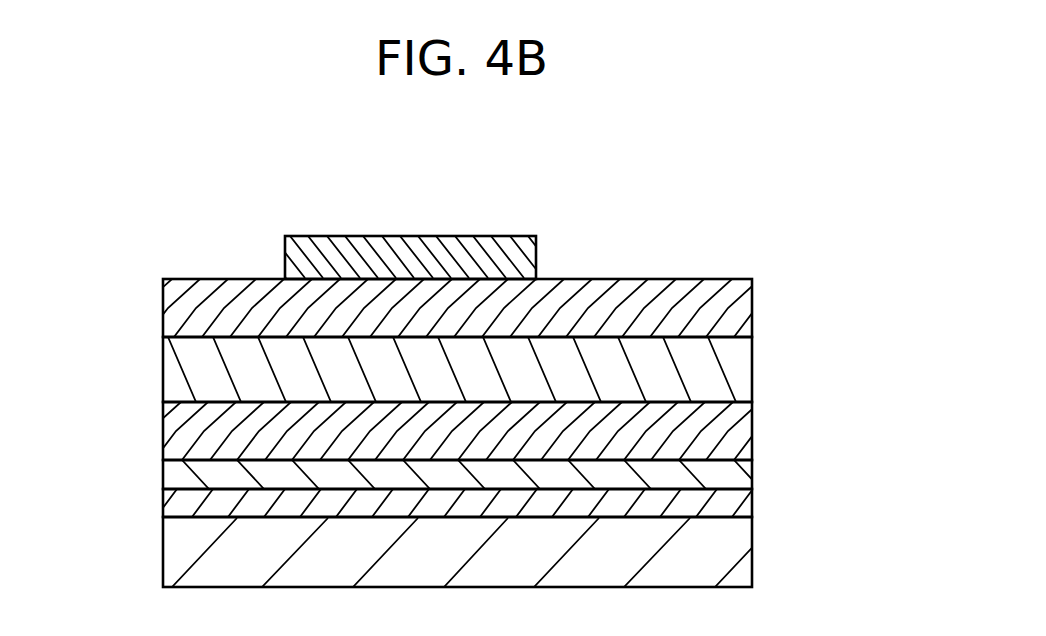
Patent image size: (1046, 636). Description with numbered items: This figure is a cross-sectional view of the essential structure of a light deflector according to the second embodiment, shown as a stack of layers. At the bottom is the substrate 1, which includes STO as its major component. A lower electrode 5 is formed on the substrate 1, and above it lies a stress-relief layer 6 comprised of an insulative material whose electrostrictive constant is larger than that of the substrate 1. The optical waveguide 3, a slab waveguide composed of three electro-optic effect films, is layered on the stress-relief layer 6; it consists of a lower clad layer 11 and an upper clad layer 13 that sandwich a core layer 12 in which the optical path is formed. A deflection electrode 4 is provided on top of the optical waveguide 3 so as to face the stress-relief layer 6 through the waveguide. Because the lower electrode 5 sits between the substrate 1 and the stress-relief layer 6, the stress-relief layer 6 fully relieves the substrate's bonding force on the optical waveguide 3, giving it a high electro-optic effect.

The substrate 1 is at (722, 555).
The optical waveguide 3 is at (500, 369).
The deflection electrode 4 is at (423, 261).
The lower electrode 5 is at (722, 503).
The stress-relief layer 6 is at (730, 477).
The lower clad layer 11 is at (478, 431).
The core layer 12 is at (727, 367).
The upper clad layer 13 is at (727, 313).